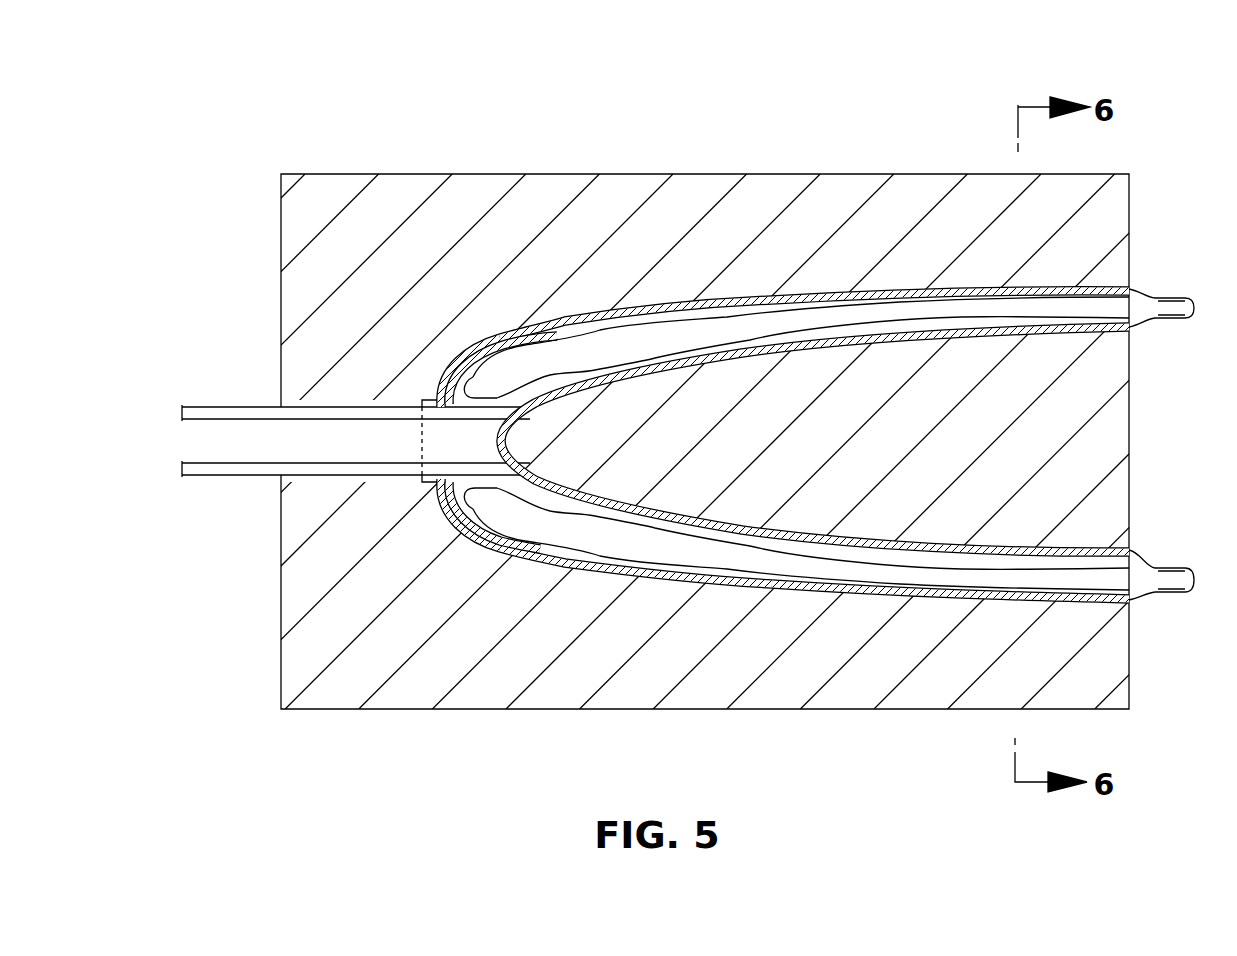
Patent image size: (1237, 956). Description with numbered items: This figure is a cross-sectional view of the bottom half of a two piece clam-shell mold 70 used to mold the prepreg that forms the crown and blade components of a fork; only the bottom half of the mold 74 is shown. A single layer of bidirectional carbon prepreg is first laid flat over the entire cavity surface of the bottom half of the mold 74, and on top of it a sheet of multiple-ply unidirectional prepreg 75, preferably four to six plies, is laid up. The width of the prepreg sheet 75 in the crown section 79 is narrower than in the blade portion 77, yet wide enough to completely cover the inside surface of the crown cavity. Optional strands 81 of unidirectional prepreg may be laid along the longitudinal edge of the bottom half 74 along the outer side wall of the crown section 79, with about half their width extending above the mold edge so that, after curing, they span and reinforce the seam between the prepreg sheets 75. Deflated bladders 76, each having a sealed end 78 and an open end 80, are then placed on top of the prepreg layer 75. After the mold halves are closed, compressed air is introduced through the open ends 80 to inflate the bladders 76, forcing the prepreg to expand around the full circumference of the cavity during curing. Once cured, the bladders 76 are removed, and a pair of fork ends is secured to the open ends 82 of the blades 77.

The two piece clam-shell mold 70 is at (504, 160).
The bottom half of the mold 74 is at (380, 203).
The unidirectional prepreg sheet 75 is at (679, 305).
The bladder 76 is at (751, 312).
The blade portion 77 is at (883, 292).
The sealed end 78 is at (447, 373).
The crown section 79 is at (484, 340).
The open end 80 is at (1137, 290).
The prepreg strands 81 is at (473, 348).
The open ends of blades 82 is at (1139, 331).